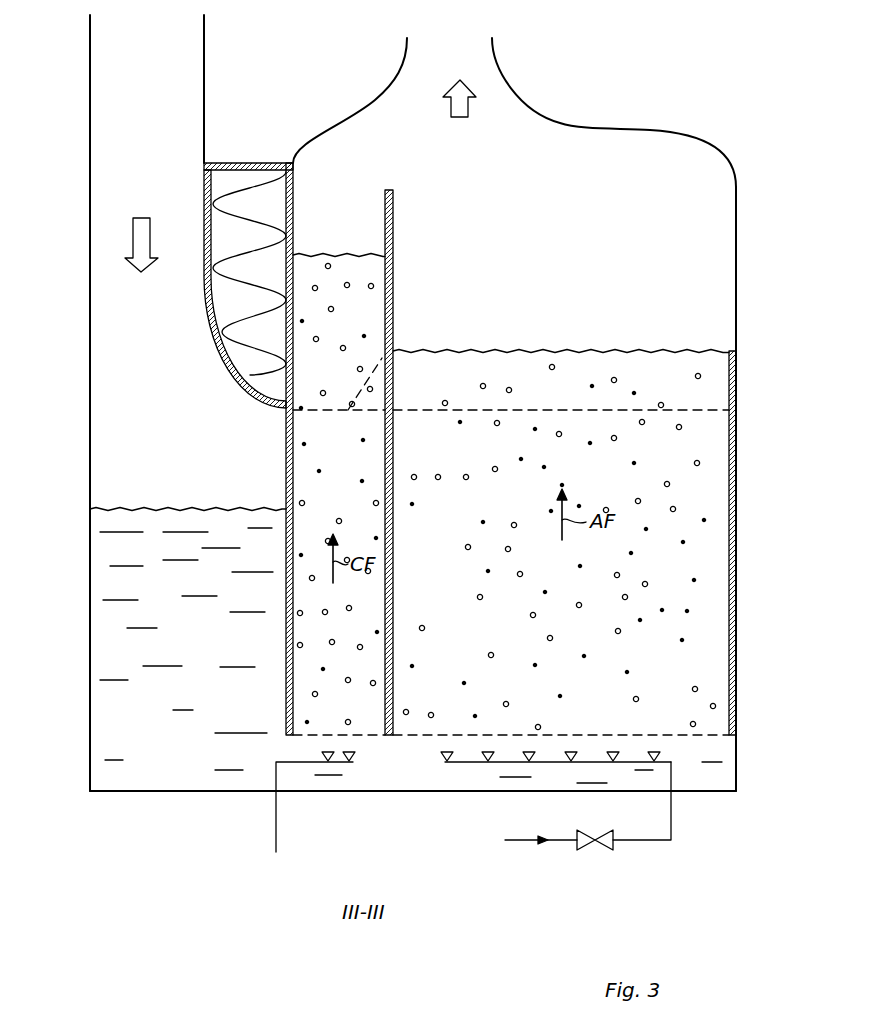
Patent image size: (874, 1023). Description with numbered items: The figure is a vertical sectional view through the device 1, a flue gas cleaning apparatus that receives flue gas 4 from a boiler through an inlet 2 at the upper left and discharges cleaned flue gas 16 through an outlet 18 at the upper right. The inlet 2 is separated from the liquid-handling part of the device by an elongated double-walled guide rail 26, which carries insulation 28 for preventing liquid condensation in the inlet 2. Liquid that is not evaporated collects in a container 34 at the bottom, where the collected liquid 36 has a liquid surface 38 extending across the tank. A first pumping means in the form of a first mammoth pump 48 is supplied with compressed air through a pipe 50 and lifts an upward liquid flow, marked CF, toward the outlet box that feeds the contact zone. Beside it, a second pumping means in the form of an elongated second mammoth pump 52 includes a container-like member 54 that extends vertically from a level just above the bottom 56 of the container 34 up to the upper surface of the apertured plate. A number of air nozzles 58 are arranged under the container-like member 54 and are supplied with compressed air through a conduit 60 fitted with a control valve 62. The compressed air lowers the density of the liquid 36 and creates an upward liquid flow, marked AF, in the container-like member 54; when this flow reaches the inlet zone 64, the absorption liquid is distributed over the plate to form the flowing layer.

The device 1 is at (318, 89).
The inlet 2 is at (91, 108).
The flue gas 4 is at (130, 238).
The cleaned flue gas 16 is at (468, 107).
The outlet 18 is at (535, 107).
The double-walled guide rail 26 is at (222, 358).
The insulation 28 is at (235, 297).
The container 34 is at (91, 740).
The liquid 36 is at (183, 745).
The liquid surface 38 is at (200, 507).
The first mammoth pump 48 is at (287, 652).
The pipe 50 is at (277, 832).
The second mammoth pump 52 is at (697, 737).
The container-like member 54 is at (729, 607).
The bottom 56 is at (115, 790).
The air nozzles 58 is at (447, 757).
The conduit 60 is at (640, 843).
The control valve 62 is at (600, 851).
The inlet zone 64 is at (692, 385).